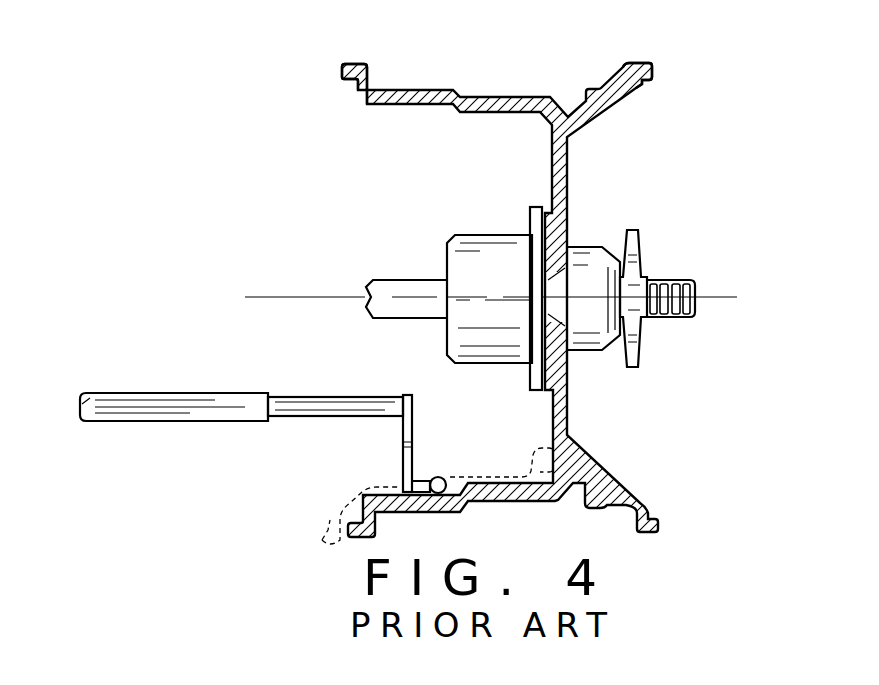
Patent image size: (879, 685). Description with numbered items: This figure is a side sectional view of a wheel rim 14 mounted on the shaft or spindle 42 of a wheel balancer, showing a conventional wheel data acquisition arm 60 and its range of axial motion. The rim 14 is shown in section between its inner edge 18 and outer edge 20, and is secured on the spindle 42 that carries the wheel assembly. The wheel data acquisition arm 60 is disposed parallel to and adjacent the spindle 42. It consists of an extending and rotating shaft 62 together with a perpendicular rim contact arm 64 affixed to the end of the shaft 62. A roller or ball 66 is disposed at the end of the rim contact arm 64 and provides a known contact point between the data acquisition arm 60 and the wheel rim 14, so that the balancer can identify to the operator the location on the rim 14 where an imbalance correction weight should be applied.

The wheel rim 14 is at (498, 97).
The inner edge 18 is at (644, 80).
The outer edge 20 is at (352, 79).
The shaft or spindle 42 is at (398, 280).
The wheel data acquisition arm 60 is at (267, 444).
The extending and rotating shaft 62 is at (376, 422).
The rim contact arm 64 is at (417, 433).
The roller or ball 66 is at (438, 477).